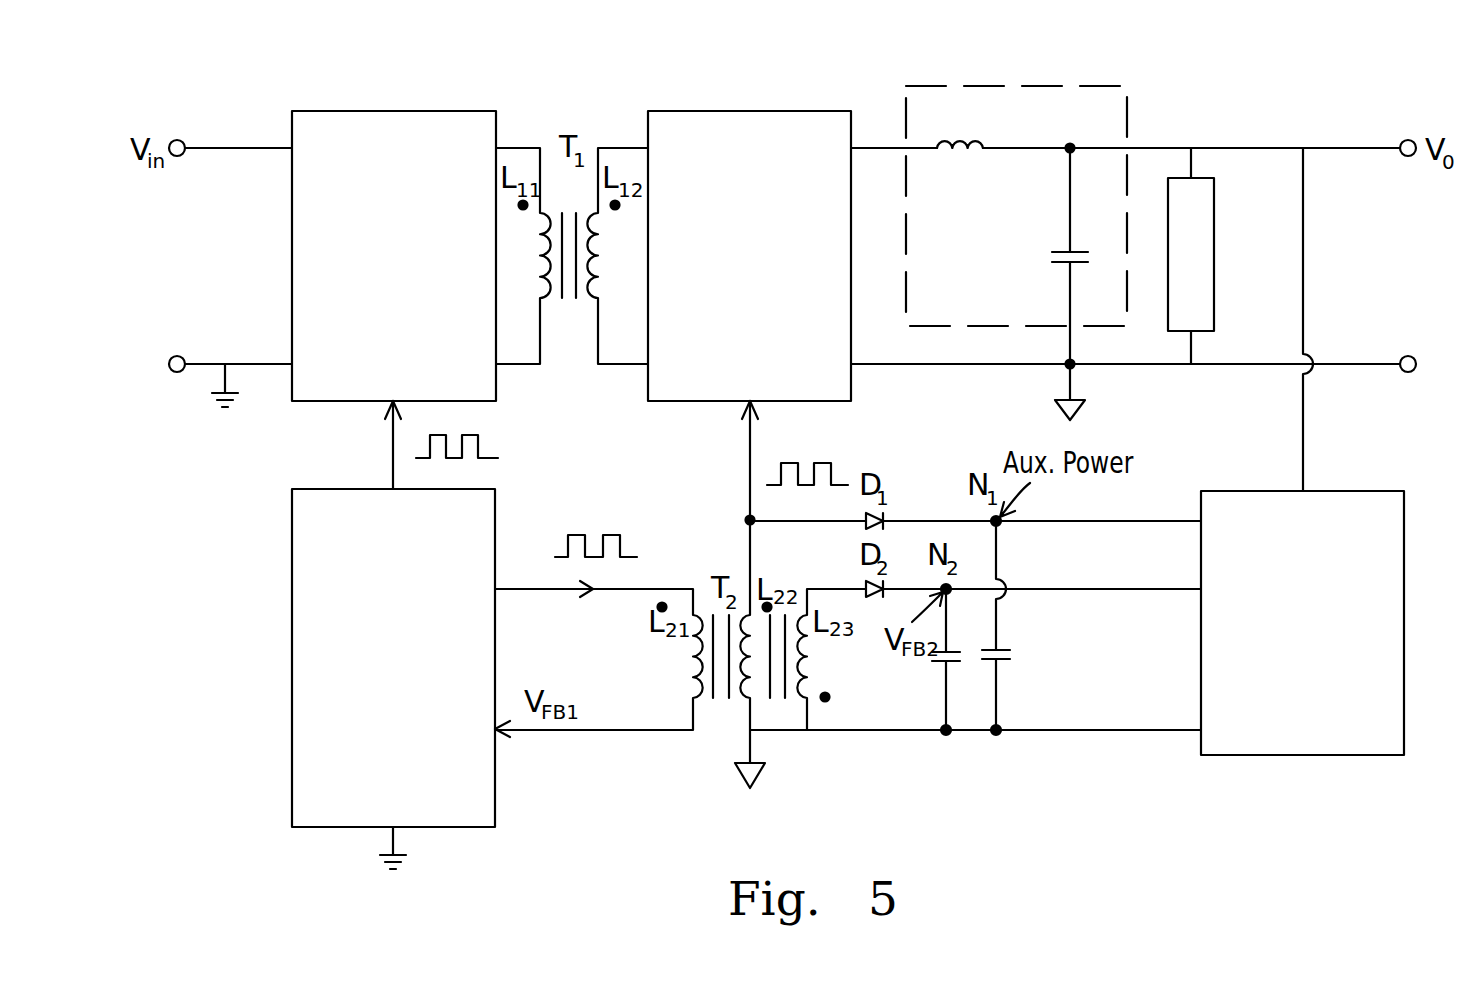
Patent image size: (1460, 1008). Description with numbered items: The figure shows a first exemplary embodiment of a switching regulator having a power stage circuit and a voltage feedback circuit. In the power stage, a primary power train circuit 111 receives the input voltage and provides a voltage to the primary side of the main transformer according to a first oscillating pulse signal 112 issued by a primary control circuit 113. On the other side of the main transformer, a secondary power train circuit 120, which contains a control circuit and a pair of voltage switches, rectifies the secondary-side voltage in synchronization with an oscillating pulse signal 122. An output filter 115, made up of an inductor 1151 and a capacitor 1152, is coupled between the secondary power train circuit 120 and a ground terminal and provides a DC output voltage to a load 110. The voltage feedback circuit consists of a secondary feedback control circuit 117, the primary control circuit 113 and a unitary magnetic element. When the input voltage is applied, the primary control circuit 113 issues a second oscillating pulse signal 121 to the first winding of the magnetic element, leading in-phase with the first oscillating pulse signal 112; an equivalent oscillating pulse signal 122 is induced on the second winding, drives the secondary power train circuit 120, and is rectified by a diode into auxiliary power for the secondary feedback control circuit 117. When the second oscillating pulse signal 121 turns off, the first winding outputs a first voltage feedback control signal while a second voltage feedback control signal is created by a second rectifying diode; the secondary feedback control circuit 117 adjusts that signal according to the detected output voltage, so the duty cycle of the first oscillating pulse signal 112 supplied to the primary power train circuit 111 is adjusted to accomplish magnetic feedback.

The load 110 is at (1202, 308).
The primary power train circuit 111 is at (432, 125).
The first oscillating pulse signal 112 is at (487, 458).
The primary control circuit 113 is at (312, 560).
The output filter 115 is at (1103, 117).
The inductor 1151 is at (965, 140).
The capacitor 1152 is at (1063, 250).
The secondary feedback control circuit 117 is at (1368, 505).
The secondary power train circuit 120 is at (735, 127).
The second oscillating pulse signal 121 is at (620, 543).
The oscillating pulse signal 122 is at (837, 478).